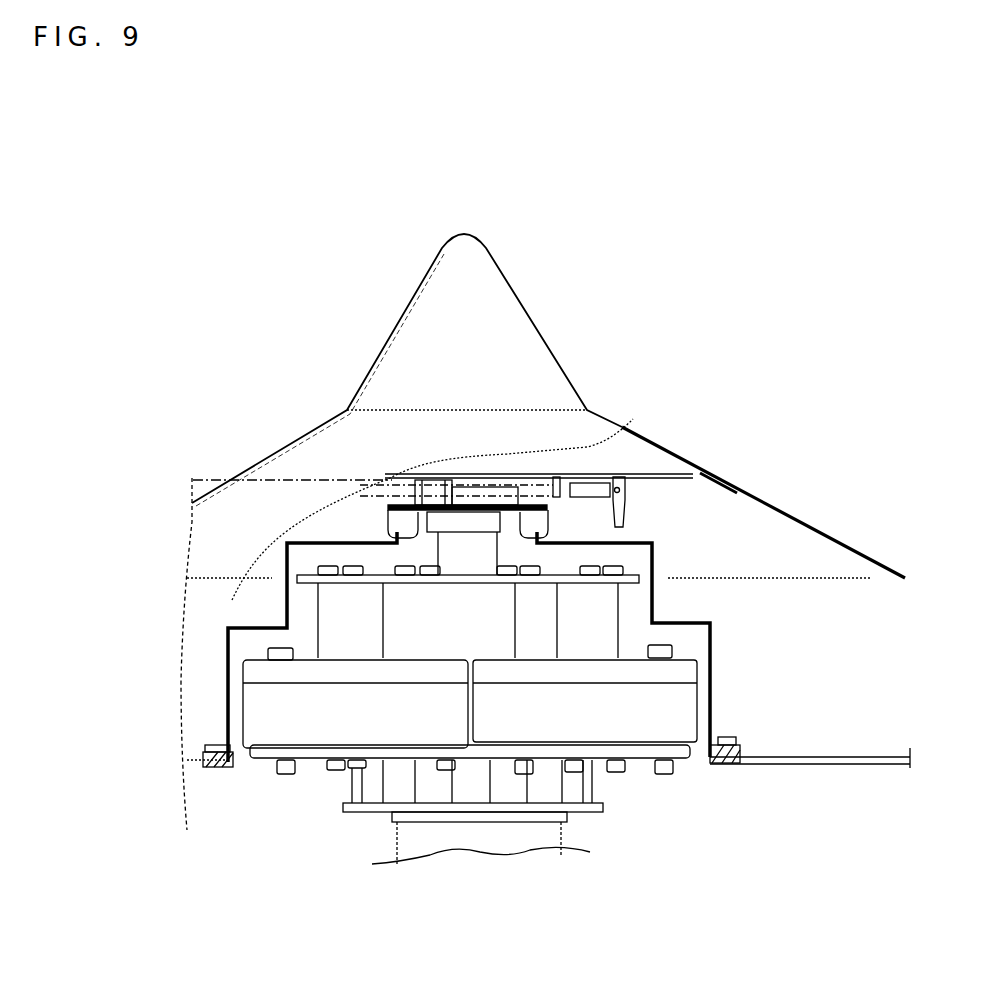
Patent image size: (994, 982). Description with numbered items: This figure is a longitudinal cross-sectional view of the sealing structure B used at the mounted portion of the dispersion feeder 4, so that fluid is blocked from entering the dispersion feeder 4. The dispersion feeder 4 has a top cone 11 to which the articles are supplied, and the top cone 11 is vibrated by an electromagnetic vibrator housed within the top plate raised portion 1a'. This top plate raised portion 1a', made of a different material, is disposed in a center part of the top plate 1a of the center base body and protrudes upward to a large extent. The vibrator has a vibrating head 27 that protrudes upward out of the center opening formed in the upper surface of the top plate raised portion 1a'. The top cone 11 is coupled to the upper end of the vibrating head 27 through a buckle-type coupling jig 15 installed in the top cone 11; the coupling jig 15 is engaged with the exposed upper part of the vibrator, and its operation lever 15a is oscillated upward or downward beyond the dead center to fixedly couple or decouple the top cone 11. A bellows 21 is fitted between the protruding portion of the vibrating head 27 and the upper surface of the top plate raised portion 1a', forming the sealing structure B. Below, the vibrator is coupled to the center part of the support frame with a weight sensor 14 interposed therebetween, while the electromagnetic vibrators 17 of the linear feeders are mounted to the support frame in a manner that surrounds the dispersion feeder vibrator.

The dispersion feeder 4 is at (352, 350).
The top cone 11 is at (563, 375).
The buckle-type coupling jig 15 is at (490, 474).
The operation lever 15a is at (623, 512).
The vibrating head 27 is at (457, 483).
The bellows 21 is at (548, 513).
The sealing structure B is at (378, 527).
The top plate raised portion 1a' is at (471, 637).
The electromagnetic vibrator 17 is at (622, 618).
The weight sensor 14 is at (400, 837).
The top plate 1a is at (810, 738).